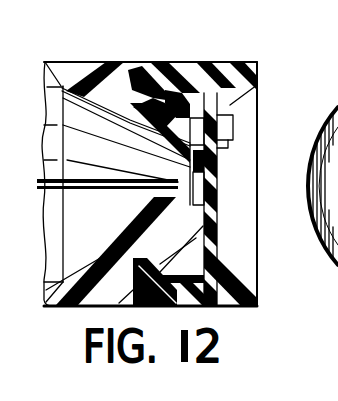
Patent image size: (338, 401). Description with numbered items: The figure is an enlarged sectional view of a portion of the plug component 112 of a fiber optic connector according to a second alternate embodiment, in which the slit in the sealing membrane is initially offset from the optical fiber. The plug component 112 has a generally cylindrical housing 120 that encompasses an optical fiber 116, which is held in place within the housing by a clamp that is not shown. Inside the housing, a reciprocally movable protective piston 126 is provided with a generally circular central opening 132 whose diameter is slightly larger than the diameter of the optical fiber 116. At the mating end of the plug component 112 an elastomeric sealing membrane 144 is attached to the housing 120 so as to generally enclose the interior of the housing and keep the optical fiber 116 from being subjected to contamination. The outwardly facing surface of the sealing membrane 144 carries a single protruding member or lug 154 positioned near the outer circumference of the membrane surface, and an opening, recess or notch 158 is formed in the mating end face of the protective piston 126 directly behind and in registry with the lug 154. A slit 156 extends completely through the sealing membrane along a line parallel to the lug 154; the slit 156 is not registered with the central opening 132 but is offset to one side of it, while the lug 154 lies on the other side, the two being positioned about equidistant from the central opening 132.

The plug component 112 is at (100, 86).
The optical fiber 116 is at (117, 183).
The housing 120 is at (70, 77).
The protective piston 126 is at (136, 141).
The central opening 132 is at (193, 197).
The elastomeric sealing membrane 144 is at (210, 70).
The lug 154 is at (233, 128).
The slit 156 is at (226, 202).
The notch 158 is at (232, 160).